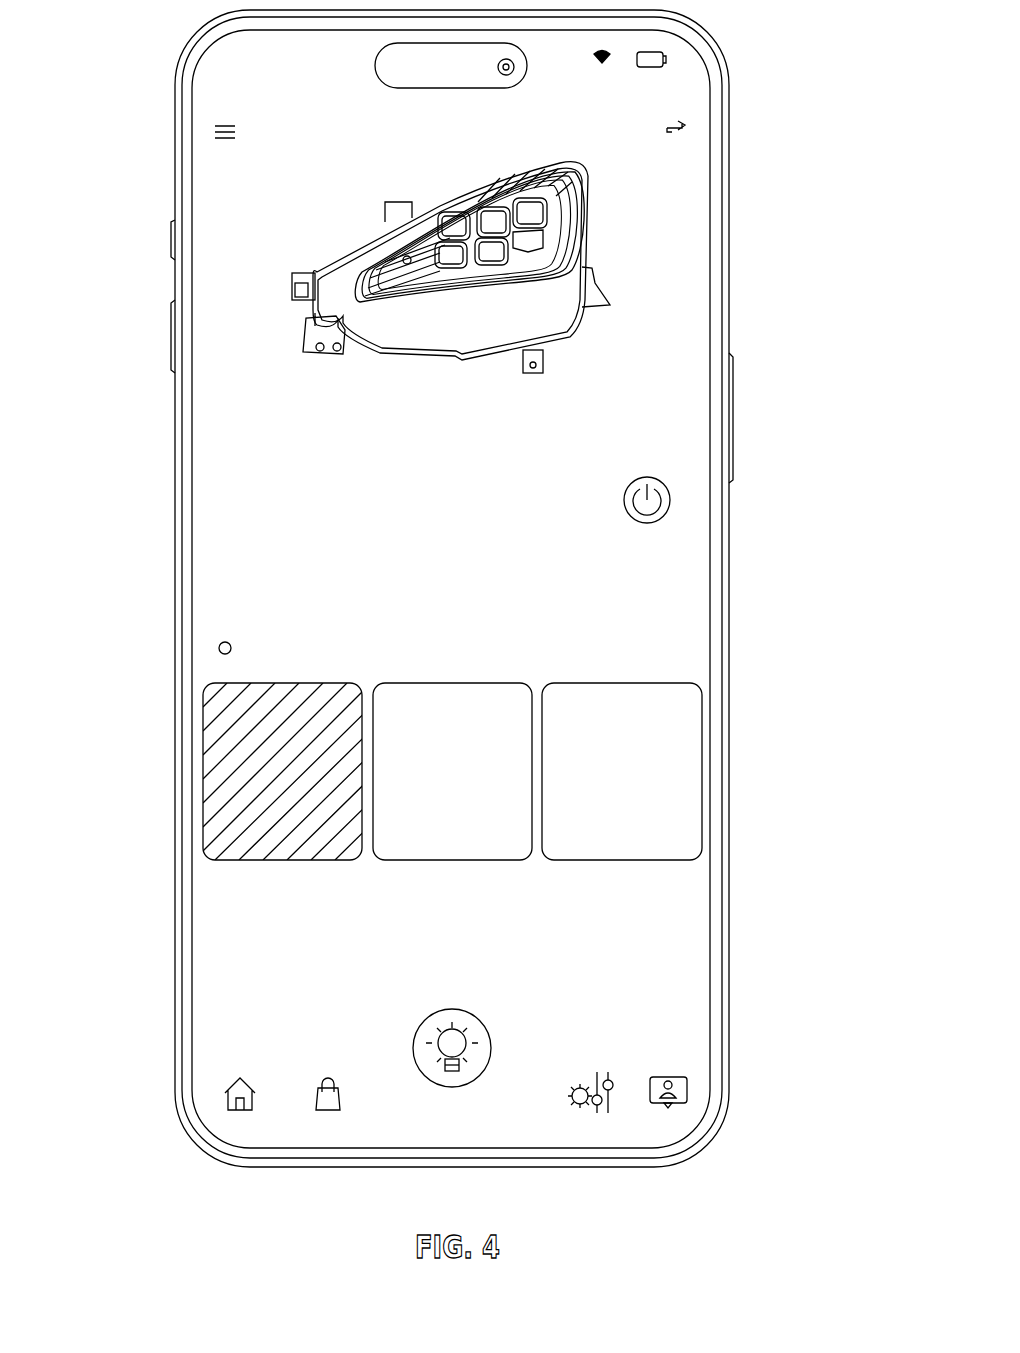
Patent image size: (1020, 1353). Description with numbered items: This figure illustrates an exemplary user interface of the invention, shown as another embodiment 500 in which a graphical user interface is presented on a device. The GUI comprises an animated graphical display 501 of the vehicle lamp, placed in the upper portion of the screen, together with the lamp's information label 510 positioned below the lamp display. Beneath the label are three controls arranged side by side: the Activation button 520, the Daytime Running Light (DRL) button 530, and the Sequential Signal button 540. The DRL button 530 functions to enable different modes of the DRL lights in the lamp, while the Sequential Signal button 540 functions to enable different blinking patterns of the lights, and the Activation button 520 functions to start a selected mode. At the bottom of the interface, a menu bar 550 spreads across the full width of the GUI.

The embodiment 500 is at (150, 105).
The animated graphical display 501 is at (622, 200).
The lamp's information label 510 is at (197, 527).
The Activation button 520 is at (212, 750).
The Daytime Running Light (DRL) button 530 is at (513, 690).
The Sequential Signal button 540 is at (690, 837).
The menu bar 550 is at (207, 1060).